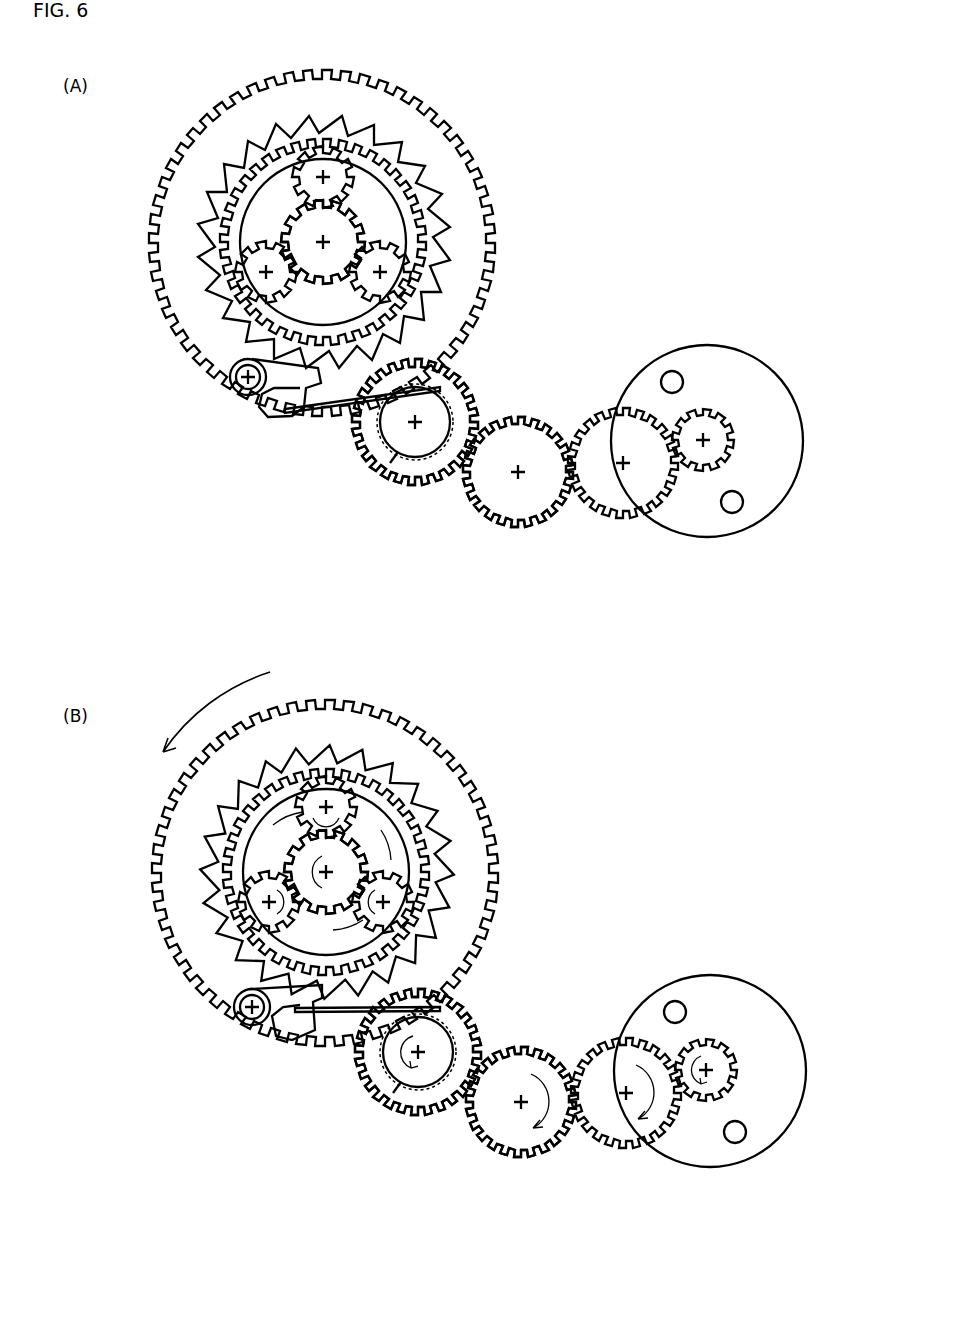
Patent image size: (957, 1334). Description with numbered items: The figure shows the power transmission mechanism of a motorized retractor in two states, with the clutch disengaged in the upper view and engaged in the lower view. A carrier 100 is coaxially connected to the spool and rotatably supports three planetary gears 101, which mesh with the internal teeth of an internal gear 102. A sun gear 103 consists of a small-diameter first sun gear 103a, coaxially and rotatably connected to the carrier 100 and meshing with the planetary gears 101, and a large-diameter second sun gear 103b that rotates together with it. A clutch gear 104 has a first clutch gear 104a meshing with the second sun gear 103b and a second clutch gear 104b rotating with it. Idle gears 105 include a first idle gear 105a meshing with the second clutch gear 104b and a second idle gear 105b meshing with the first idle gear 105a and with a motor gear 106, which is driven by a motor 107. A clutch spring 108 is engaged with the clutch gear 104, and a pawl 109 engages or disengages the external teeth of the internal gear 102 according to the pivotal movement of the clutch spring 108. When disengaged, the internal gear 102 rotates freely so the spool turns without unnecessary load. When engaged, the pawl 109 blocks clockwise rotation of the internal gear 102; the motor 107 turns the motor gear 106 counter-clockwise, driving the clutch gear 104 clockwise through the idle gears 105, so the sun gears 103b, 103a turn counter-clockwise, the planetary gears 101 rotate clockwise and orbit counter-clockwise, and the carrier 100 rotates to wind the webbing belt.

The carrier 100 is at (268, 850).
The planetary gears 101 is at (253, 912).
The internal gear 102 is at (411, 788).
The sun gear 103 is at (456, 527).
The first sun gear 103a is at (343, 858).
The second sun gear 103b is at (466, 858).
The clutch gear 104 is at (484, 713).
The first clutch gear 104a is at (430, 1037).
The second clutch gear 104b is at (465, 1037).
The idle gears 105 is at (581, 1232).
The first idle gear 105a is at (535, 1180).
The second idle gear 105b is at (605, 1180).
The motor gear 106 is at (730, 1057).
The motor 107 is at (735, 1000).
The clutch spring 108 is at (340, 1015).
The pawl 109 is at (265, 1028).